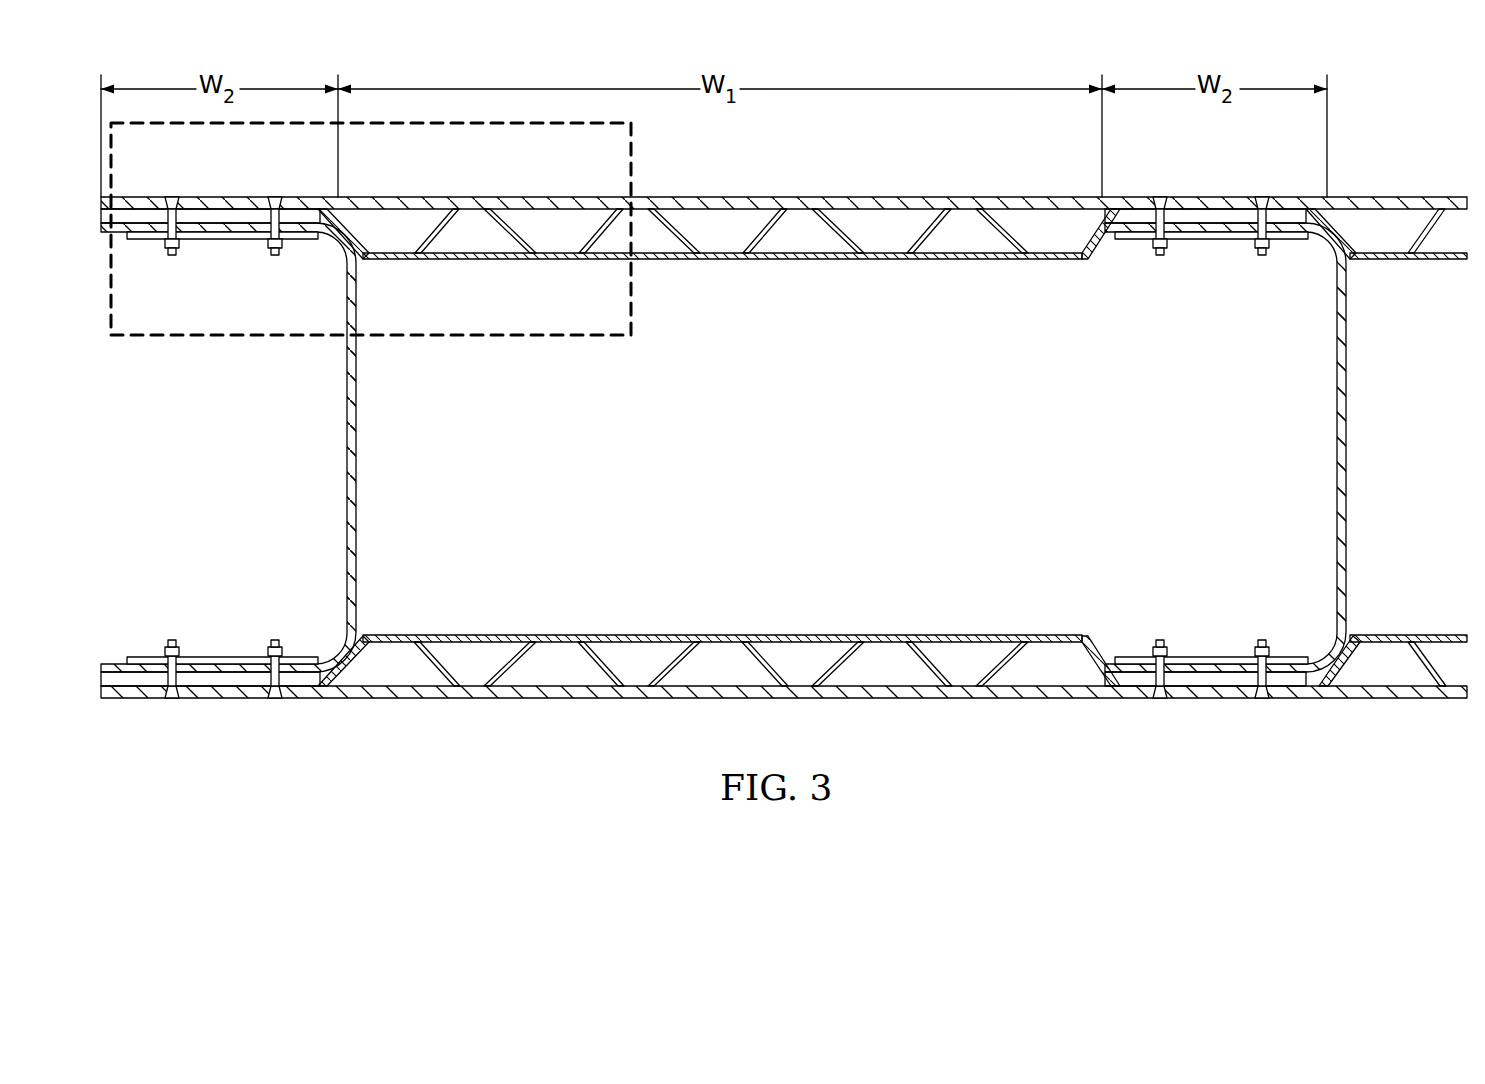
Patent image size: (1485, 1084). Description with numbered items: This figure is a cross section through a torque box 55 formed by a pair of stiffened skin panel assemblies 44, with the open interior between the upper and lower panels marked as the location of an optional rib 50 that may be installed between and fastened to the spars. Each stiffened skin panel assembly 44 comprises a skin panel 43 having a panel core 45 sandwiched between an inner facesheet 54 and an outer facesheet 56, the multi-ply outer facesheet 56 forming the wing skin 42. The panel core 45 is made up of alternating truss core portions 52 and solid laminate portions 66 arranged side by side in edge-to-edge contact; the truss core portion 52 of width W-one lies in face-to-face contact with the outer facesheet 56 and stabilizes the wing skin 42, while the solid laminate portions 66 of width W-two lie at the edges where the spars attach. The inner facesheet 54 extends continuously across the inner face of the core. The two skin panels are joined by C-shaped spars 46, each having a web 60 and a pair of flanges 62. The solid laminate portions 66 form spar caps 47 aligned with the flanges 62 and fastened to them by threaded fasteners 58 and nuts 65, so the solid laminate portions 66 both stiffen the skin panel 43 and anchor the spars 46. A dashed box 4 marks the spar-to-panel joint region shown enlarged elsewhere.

The detail region of FIG. 4 is at (636, 150).
The wing skin 42 is at (784, 442).
The skin panel 43 is at (803, 232).
The stiffened skin panel assembly 44 is at (722, 276).
The panel core 45 is at (926, 297).
The spar 46 is at (753, 447).
The spar cap 47 is at (704, 449).
The rib 50 is at (831, 462).
The truss core portion 52 is at (1062, 229).
The inner facesheet 54 is at (652, 635).
The torque box 55 is at (687, 366).
The outer facesheet 56 is at (872, 205).
The threaded fastener 58 is at (176, 197).
The web 60 is at (347, 488).
The flange 62 is at (240, 239).
The nut 65 is at (170, 250).
The solid laminate portion 66 is at (220, 218).